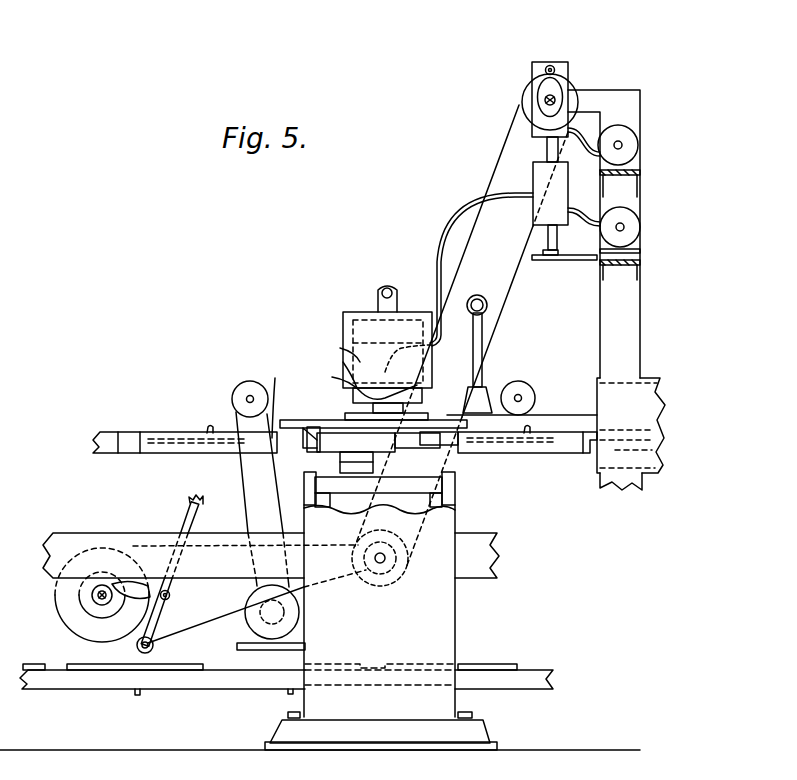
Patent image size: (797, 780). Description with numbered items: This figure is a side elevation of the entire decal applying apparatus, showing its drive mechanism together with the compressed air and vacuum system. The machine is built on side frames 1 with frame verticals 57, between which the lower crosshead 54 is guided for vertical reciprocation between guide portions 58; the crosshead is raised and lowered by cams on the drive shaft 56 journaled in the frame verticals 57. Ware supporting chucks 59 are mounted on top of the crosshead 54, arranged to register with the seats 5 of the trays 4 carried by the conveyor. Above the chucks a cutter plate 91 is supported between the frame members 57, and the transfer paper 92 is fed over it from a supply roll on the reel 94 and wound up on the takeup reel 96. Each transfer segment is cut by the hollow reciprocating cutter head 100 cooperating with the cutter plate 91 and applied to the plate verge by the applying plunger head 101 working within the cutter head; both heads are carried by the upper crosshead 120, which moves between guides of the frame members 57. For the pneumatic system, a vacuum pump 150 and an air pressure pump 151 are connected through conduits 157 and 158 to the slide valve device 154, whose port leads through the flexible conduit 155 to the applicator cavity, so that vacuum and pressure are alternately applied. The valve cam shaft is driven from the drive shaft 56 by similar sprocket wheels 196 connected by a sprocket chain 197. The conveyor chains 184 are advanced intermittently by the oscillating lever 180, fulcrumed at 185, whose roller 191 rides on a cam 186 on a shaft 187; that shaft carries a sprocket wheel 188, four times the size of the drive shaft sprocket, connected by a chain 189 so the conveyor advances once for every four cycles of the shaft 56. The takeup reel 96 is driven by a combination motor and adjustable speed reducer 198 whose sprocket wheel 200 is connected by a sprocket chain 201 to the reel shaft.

The side frame 1 is at (62, 540).
The tray 4 is at (150, 450).
The seat 5 is at (294, 428).
The lower crosshead 54 is at (445, 494).
The shaft 56 is at (385, 565).
The frame vertical 57 is at (440, 622).
The guide portion 58 is at (446, 482).
The ware supporting chuck 59 is at (386, 441).
The cutter plate 91 is at (428, 418).
The transfer paper 92 is at (269, 398).
The reel 94 is at (526, 396).
The takeup reel 96 is at (244, 394).
The cutter head 100 is at (359, 377).
The applying plunger head 101 is at (332, 349).
The crosshead 120 is at (370, 320).
The vacuum pump 150 is at (625, 146).
The air pressure pump 151 is at (627, 227).
The slide valve device 154 is at (540, 183).
The flexible conduit 155 is at (460, 218).
The conduit 157 is at (622, 128).
The conduit 158 is at (612, 210).
The oscillating lever 180 is at (190, 520).
The chain 184 is at (130, 432).
The fulcrum 185 is at (162, 641).
The cam 186 is at (108, 624).
The shaft 187 is at (92, 595).
The sprocket wheel 188 is at (72, 612).
The chain 189 is at (200, 620).
The roller 191 is at (171, 587).
The sprocket wheel 196 is at (437, 325).
The sprocket chain 197 is at (508, 300).
The combination motor and adjustable speed reducer 198 is at (272, 628).
The sprocket wheel 200 is at (292, 572).
The sprocket chain 201 is at (244, 488).